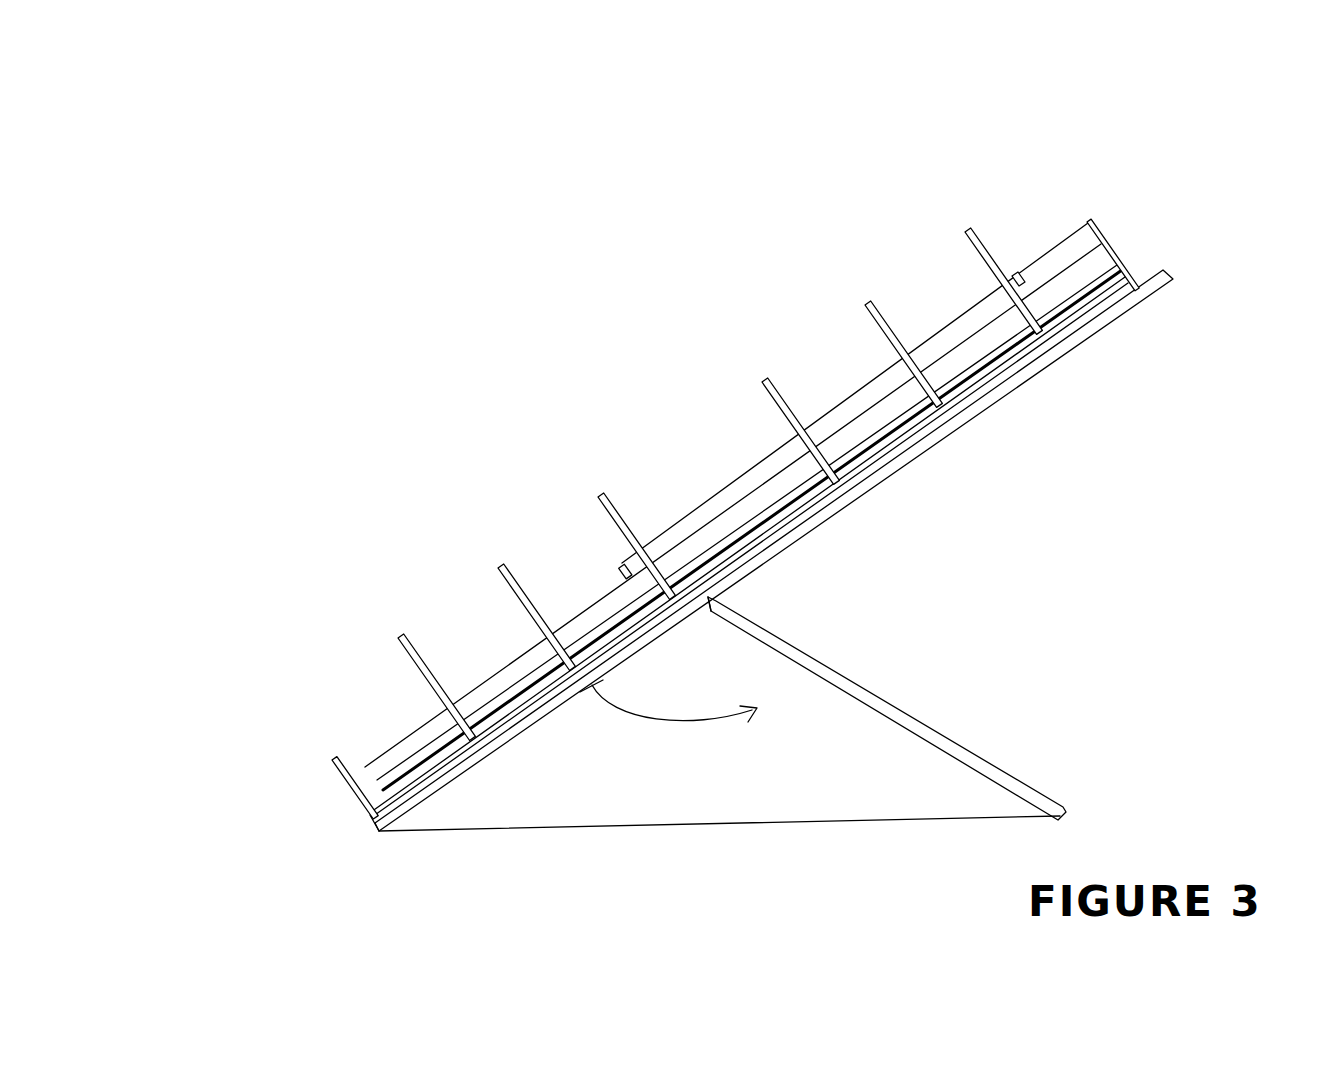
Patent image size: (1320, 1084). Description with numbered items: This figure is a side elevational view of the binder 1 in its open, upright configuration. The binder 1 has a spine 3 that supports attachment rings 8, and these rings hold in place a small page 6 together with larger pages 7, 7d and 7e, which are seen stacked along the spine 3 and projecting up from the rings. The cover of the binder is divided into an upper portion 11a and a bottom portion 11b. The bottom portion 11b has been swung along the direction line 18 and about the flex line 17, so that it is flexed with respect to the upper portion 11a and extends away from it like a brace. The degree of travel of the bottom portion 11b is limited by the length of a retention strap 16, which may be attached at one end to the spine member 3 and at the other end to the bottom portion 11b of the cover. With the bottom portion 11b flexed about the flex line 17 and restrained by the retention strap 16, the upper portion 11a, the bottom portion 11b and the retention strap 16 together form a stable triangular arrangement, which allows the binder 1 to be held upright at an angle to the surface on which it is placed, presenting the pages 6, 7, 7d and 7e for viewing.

The binder 1 is at (1140, 179).
The spine 3 is at (378, 829).
The small page 6 is at (1019, 279).
The larger page 7 is at (613, 588).
The larger page 7d is at (383, 792).
The larger page 7e is at (372, 784).
The attachment rings 8 is at (968, 232).
The upper portion 11a is at (1110, 328).
The bottom portion 11b is at (936, 724).
The retention strap 16 is at (818, 823).
The flex line 17 is at (719, 606).
The direction line 18 is at (668, 722).